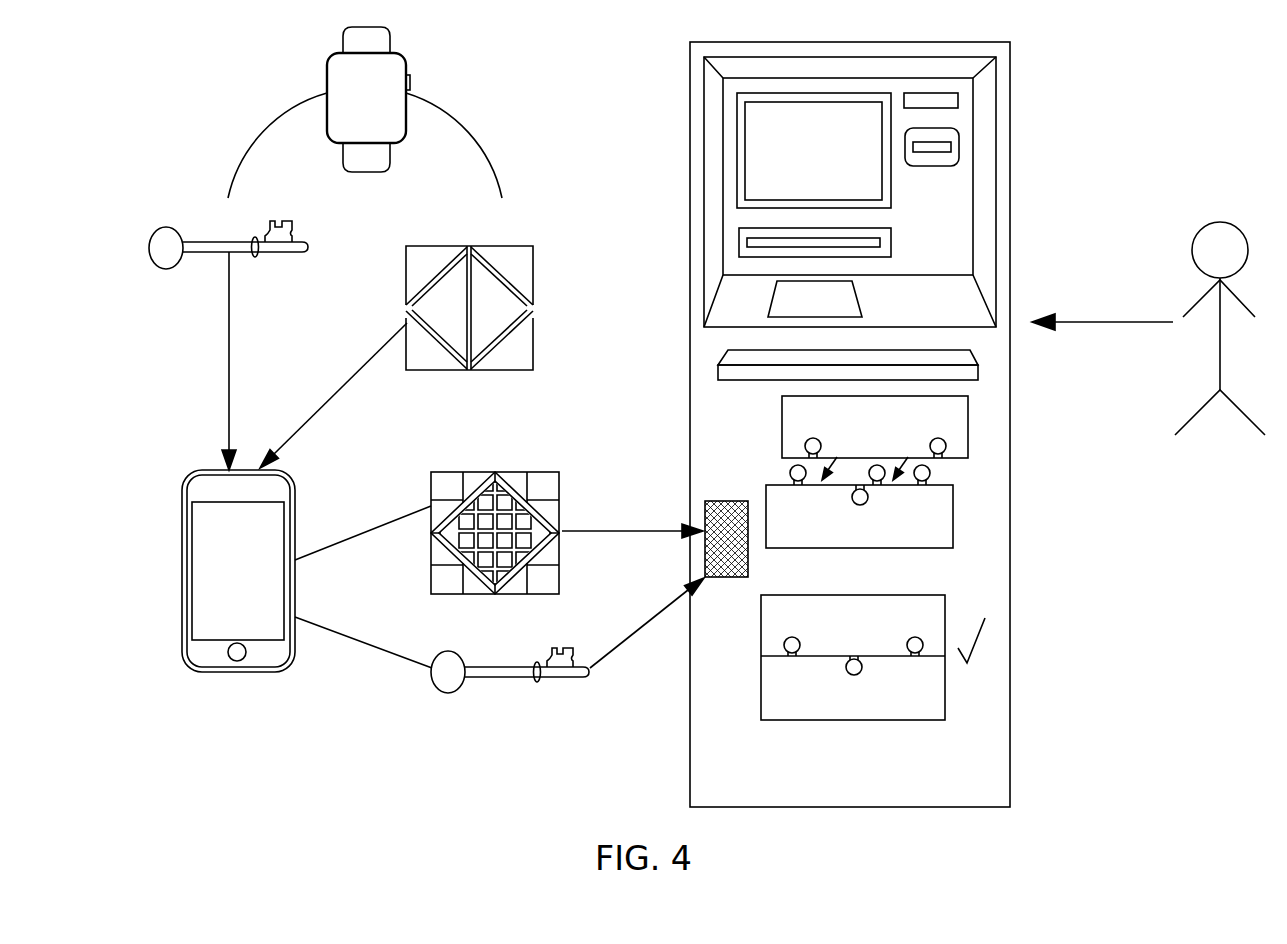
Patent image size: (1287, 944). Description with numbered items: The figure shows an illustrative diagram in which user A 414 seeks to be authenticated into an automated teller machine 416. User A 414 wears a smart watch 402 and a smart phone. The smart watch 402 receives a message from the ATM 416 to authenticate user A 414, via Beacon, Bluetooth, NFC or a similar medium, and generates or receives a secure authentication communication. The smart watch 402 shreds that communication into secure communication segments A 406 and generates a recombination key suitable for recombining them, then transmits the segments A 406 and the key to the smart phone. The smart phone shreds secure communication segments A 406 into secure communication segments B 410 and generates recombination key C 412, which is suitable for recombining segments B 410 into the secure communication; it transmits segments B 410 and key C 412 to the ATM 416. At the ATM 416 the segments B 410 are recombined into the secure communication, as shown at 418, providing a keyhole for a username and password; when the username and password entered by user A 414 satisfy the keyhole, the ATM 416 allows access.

The smart watch 402 is at (327, 82).
The secure communication segments A 406 is at (534, 345).
The secure communication segments B 410 is at (559, 498).
The recombination key C 412 is at (480, 680).
The user A 414 is at (1220, 323).
The automated teller machine (ATM) 416 is at (1010, 186).
The recombination of secure communication segments B 418 is at (710, 501).